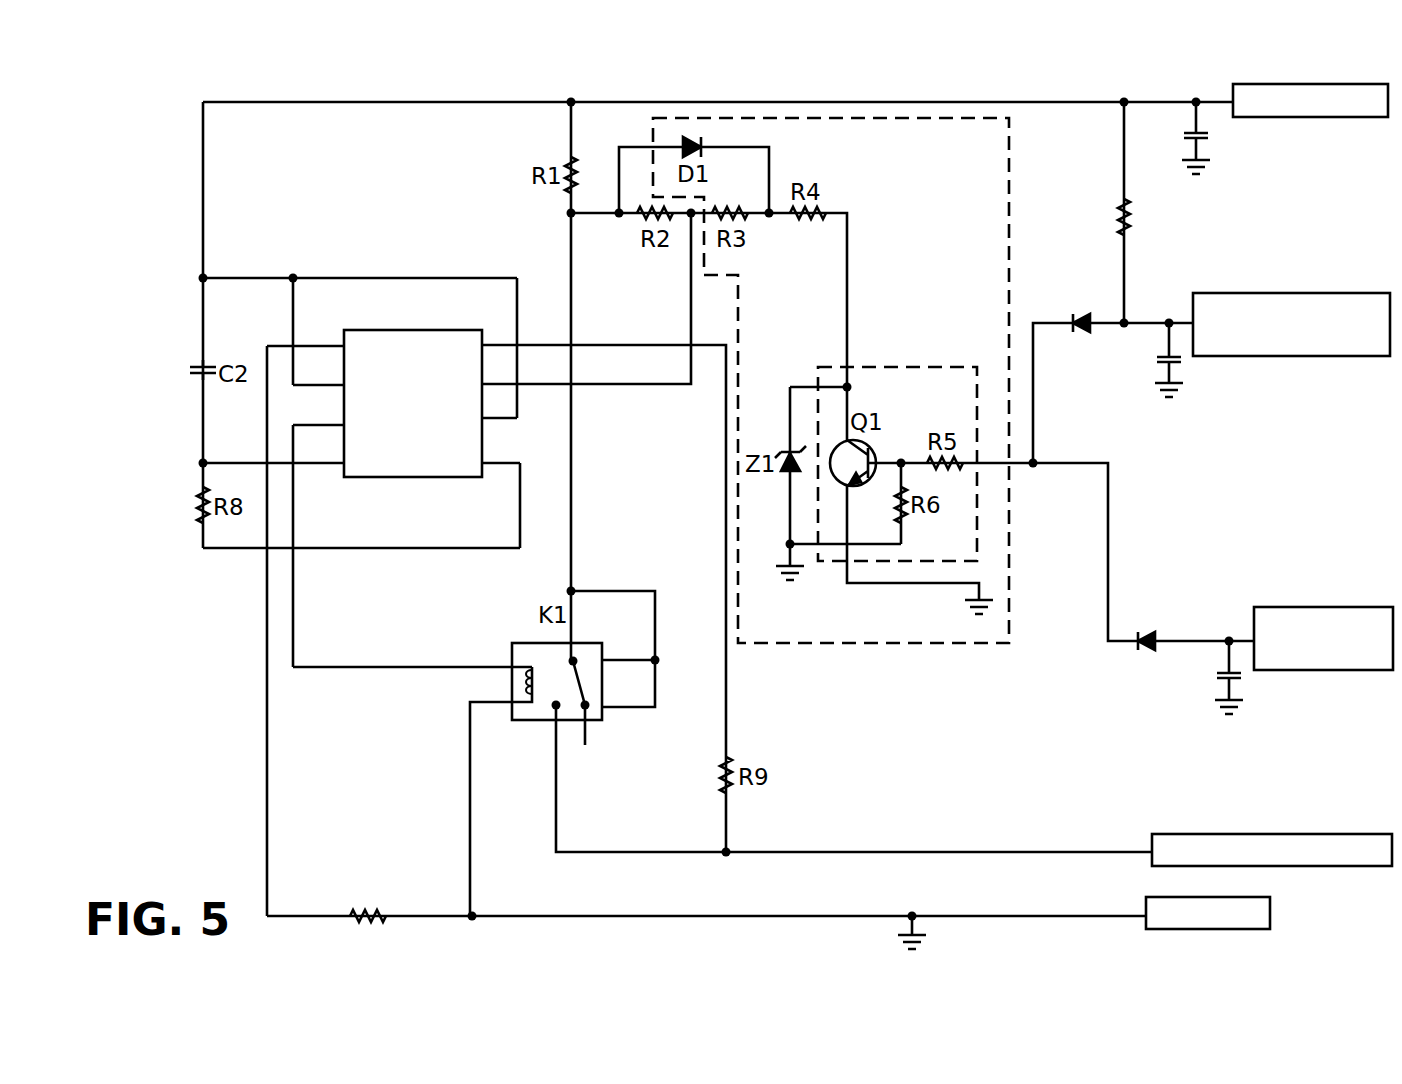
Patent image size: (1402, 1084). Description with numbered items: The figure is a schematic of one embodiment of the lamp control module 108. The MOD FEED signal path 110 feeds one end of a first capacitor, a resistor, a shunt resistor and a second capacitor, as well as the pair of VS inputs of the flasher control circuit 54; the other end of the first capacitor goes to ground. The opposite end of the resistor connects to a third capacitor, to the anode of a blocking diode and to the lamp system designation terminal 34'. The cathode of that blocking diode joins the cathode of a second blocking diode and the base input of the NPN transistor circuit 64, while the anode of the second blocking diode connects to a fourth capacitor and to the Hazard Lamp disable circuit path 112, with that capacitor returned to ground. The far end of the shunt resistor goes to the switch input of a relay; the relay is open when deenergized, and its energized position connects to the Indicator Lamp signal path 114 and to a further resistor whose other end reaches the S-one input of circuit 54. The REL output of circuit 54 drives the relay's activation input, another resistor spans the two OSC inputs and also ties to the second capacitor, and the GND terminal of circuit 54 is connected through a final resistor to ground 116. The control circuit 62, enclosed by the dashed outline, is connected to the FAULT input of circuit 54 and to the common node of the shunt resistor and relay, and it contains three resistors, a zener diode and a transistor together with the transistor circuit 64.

The flasher control circuit 54 is at (420, 477).
The control circuit 62 is at (868, 645).
The NPN transistor circuit 64 is at (911, 364).
The lamp control module 108 is at (1218, 262).
The MOD FEED signal path 110 is at (1313, 117).
The Hazard Lamp disable circuit path 112 is at (1318, 670).
The Indicator Lamp signal path 114 is at (1259, 829).
The ground 116 is at (1031, 913).
The lamp system designation terminal 34' is at (1291, 359).